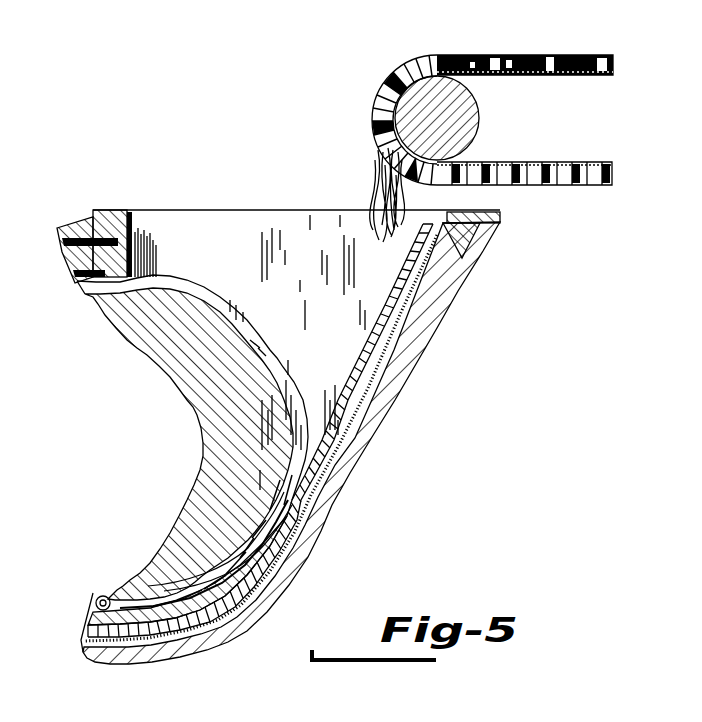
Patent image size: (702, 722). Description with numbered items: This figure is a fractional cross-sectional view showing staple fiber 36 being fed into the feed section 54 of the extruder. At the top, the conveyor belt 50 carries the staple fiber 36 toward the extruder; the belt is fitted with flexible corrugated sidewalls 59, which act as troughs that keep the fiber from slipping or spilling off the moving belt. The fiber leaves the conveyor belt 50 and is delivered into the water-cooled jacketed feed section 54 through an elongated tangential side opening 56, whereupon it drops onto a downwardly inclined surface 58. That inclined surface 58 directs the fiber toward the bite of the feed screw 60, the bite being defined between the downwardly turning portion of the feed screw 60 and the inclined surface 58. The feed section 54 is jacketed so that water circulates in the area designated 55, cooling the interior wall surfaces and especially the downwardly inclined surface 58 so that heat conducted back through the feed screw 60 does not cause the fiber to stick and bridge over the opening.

The staple fiber 36 is at (437, 54).
The flexible corrugated sidewalls 59 is at (602, 54).
The conveyor belt 50 is at (610, 74).
The feed section 54 is at (233, 202).
The tangential side opening 56 is at (428, 216).
The downwardly inclined surface 58 is at (415, 303).
The jacket water area 55 is at (400, 347).
The feed screw 60 is at (180, 385).